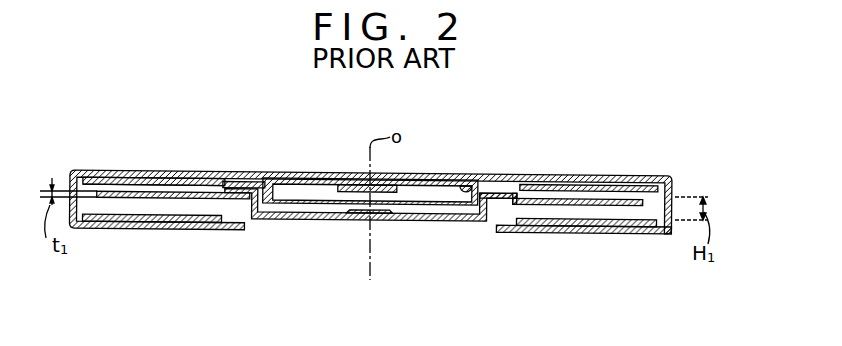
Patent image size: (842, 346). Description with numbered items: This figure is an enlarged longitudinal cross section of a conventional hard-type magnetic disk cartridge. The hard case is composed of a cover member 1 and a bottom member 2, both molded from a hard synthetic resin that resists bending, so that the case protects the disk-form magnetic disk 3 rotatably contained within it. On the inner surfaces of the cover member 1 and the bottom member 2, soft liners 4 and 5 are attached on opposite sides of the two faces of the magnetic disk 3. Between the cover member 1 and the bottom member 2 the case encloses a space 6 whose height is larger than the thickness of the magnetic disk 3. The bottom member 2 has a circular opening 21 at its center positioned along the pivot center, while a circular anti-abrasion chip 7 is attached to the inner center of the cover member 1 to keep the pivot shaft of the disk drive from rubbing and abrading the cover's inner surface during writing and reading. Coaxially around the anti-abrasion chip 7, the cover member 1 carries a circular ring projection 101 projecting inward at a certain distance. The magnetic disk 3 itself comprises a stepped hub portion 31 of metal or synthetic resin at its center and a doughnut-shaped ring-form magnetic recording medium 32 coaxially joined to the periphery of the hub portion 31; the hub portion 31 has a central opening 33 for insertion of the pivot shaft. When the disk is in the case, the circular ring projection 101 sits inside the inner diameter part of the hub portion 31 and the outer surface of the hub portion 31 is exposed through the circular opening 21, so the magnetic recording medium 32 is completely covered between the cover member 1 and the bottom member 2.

The cover member 1 is at (678, 175).
The bottom member 2 is at (617, 237).
The magnetic disk 3 is at (136, 200).
The liner 4 is at (193, 178).
The liner 5 is at (177, 228).
The space 6 is at (603, 213).
The anti-abrasion chip 7 is at (418, 181).
The circular opening 21 is at (477, 225).
The hub portion 31 is at (293, 227).
The magnetic recording medium 32 is at (168, 186).
The opening 33 is at (358, 226).
The circular ring projection 101 is at (466, 180).